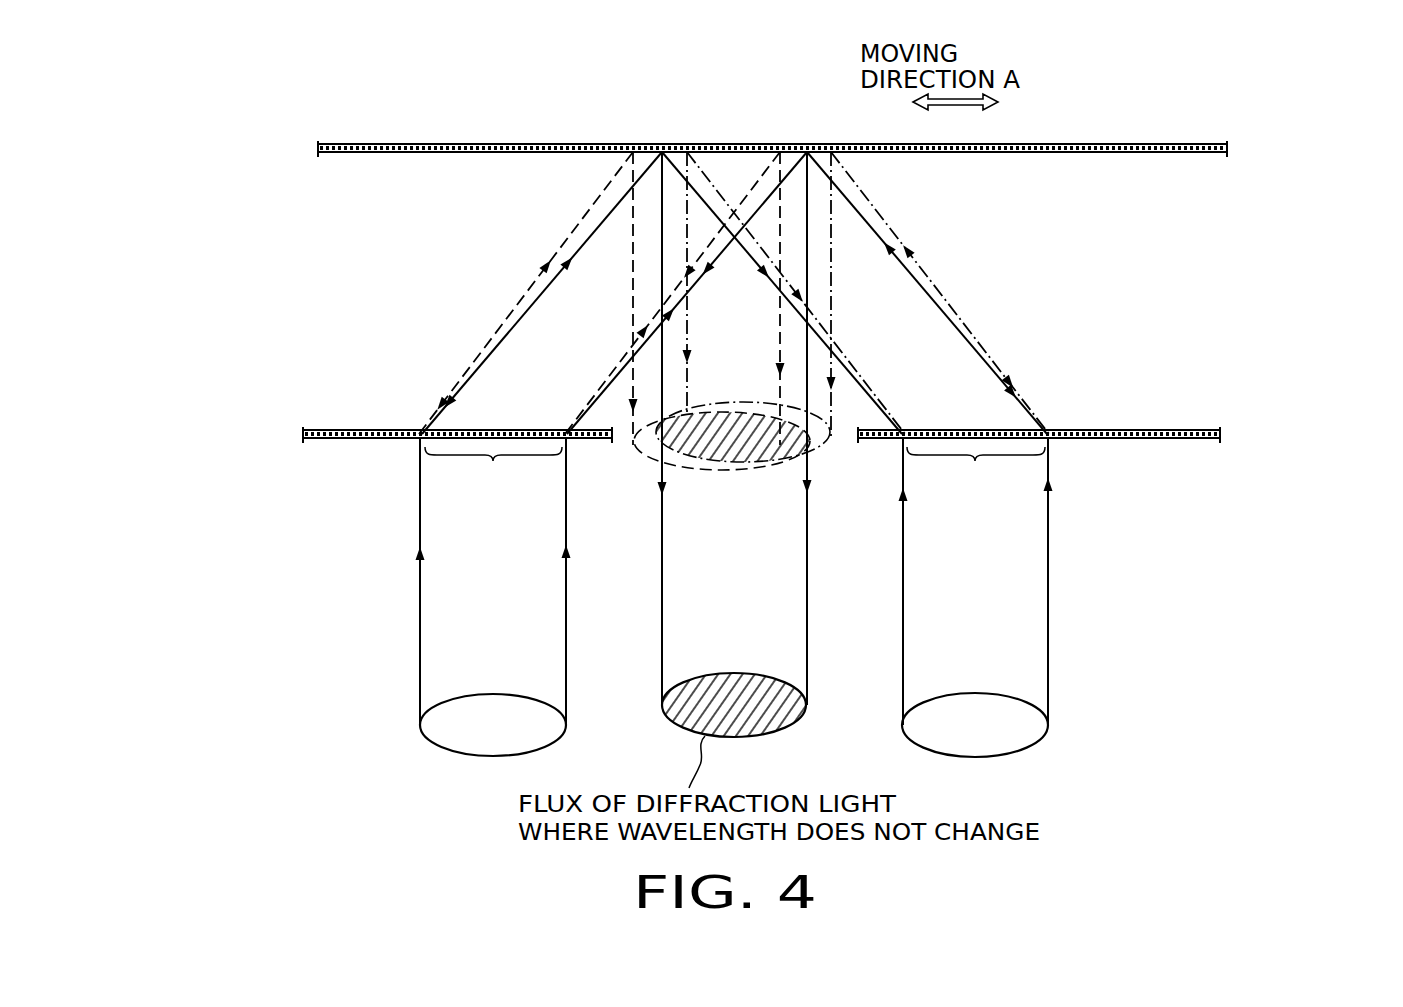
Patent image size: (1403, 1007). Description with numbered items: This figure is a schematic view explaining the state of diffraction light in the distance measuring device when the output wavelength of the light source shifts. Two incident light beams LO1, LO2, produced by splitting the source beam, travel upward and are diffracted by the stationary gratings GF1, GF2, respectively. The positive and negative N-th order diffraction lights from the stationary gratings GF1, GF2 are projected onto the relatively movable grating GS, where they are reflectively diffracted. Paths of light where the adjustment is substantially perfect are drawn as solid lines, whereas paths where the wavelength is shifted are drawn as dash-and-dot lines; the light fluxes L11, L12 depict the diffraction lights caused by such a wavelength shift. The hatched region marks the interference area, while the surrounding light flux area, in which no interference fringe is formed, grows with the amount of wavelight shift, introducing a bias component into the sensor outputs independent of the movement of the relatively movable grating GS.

The relatively movable grating GS is at (1065, 146).
The stationary grating GF1 is at (1087, 432).
The stationary grating GF2 is at (337, 432).
The light flux L11 is at (822, 443).
The light flux L12 is at (642, 446).
The light beam LO1 is at (1042, 732).
The light beam LO2 is at (430, 733).